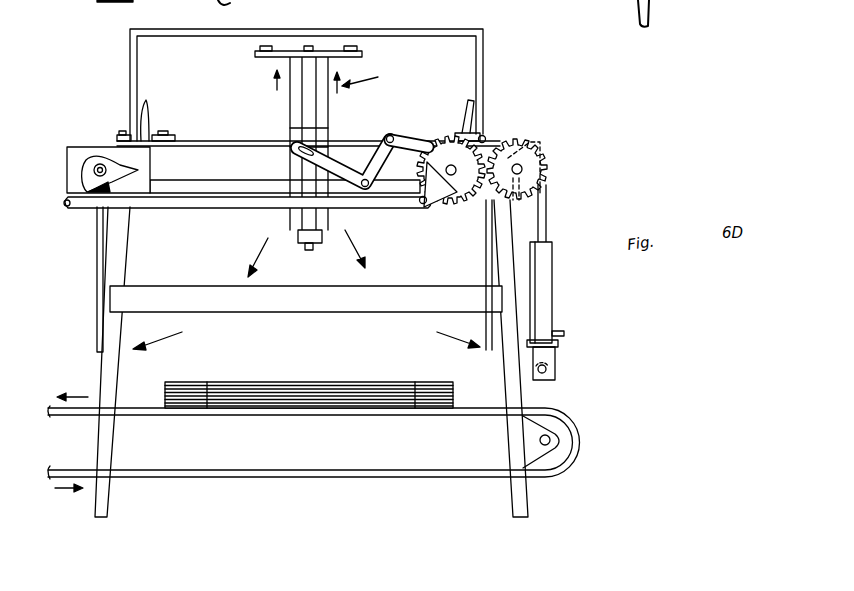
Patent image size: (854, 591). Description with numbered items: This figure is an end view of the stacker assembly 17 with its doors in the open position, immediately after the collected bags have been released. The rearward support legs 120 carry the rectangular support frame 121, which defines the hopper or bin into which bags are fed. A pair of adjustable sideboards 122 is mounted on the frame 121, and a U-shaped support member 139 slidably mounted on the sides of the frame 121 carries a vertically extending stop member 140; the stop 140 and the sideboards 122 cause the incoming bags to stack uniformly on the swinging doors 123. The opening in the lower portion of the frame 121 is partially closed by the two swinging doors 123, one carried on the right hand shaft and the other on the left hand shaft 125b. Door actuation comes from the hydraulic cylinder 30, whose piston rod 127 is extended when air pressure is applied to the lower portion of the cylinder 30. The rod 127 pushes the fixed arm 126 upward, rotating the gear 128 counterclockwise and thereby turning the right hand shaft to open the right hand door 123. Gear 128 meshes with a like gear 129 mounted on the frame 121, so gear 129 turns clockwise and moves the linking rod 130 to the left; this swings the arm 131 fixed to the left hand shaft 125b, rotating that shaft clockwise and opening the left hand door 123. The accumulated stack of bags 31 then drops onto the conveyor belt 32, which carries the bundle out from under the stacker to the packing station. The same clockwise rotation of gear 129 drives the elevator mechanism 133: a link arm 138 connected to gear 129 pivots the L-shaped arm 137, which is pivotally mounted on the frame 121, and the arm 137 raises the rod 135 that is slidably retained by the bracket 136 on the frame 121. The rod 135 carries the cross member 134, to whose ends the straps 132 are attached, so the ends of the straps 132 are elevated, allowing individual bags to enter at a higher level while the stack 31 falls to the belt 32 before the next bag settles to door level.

The stacker assembly 17 is at (255, 482).
The hydraulic cylinder 30 is at (543, 306).
The stack of bags 31 is at (298, 381).
The conveyor belt 32 is at (287, 418).
The rearward support legs 120 is at (122, 266).
The rectangular support frame 121 is at (188, 146).
The adjustable sideboards 122 is at (148, 106).
The swinging doors 123 is at (97, 277).
The left hand shaft 125b is at (97, 205).
The fixed arm 126 is at (548, 166).
The piston rod 127 is at (547, 209).
The gear 128 is at (522, 138).
The gear 129 is at (441, 152).
The linking rod 130 is at (195, 208).
The arm 131 is at (77, 188).
The straps 132 is at (279, 18).
The elevator mechanism 133 is at (382, 84).
The cross member 134 is at (313, 46).
The rod 135 is at (302, 100).
The bracket 136 is at (282, 167).
The L-shaped arm 137 is at (333, 163).
The link arm 138 is at (407, 133).
The U-shaped support member 139 is at (485, 51).
The stop member 140 is at (322, 66).